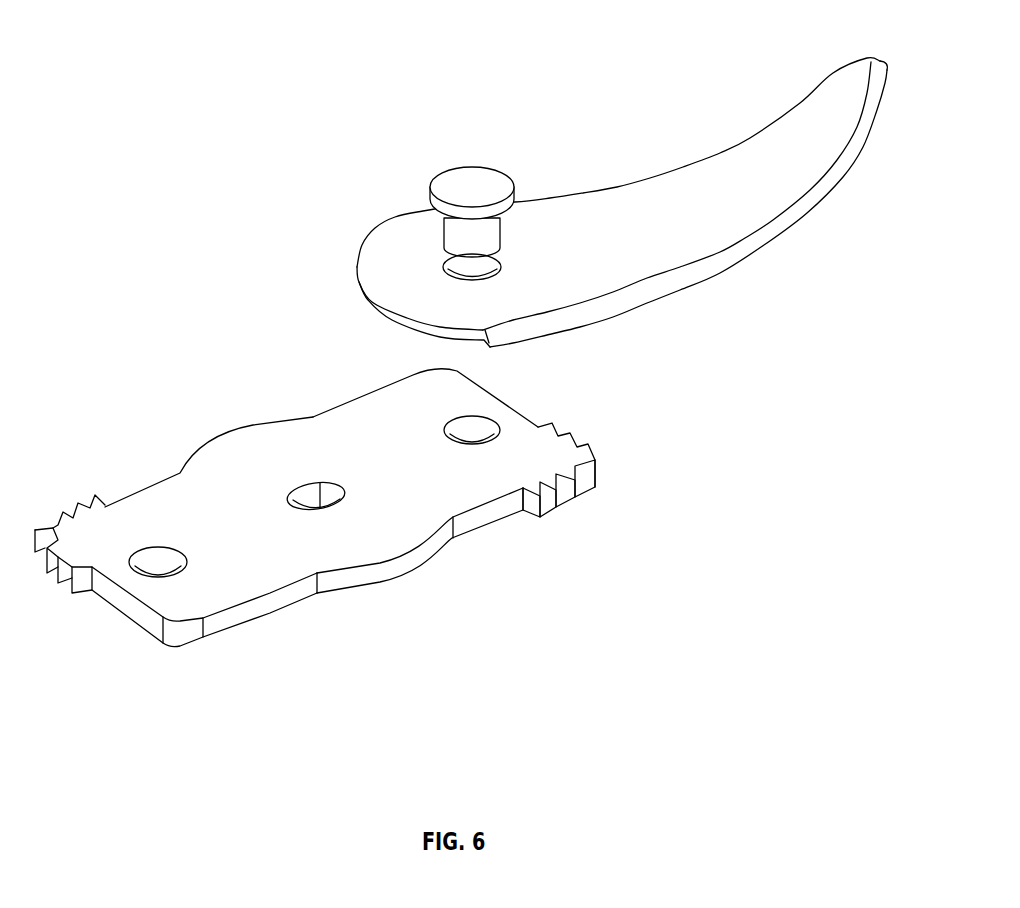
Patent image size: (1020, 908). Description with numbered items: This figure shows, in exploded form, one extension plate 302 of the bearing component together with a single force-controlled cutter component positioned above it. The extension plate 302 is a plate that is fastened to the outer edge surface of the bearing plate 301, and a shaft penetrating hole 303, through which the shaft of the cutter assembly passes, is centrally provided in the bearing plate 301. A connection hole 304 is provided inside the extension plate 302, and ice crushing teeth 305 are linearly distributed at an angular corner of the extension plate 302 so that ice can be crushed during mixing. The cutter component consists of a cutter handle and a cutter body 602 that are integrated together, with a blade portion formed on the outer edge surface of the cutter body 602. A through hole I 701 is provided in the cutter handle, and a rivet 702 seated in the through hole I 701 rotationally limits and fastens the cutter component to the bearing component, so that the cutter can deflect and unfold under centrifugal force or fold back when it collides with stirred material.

The bearing plate 301 is at (373, 542).
The extension plate 302 is at (237, 578).
The shaft penetrating hole 303 is at (310, 497).
The connection hole 304 is at (470, 427).
The ice crushing teeth 305 is at (587, 473).
The cutter body 602 is at (655, 240).
The through hole I 701 is at (455, 261).
The rivet 702 is at (470, 186).